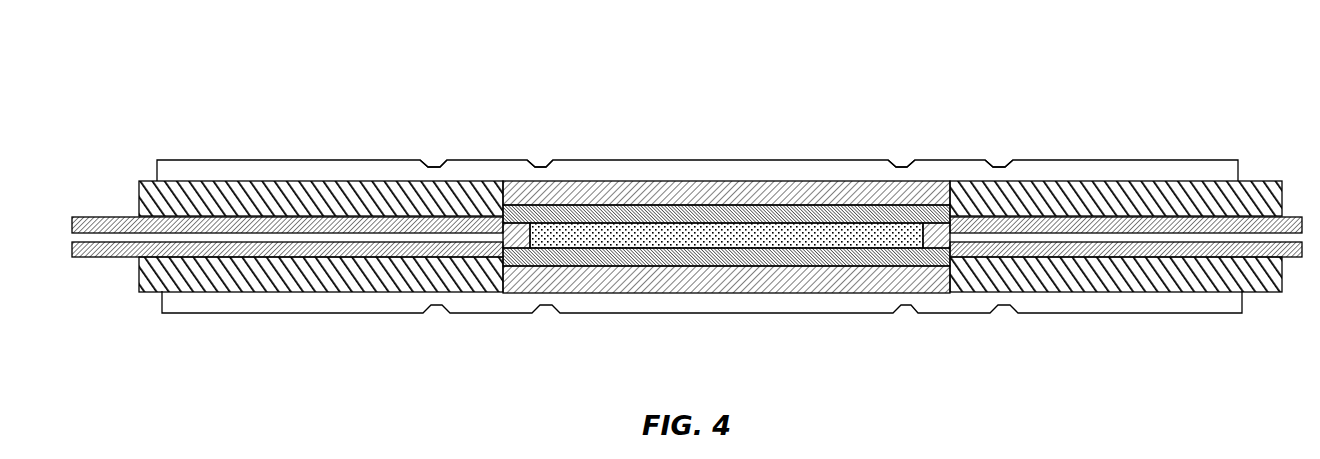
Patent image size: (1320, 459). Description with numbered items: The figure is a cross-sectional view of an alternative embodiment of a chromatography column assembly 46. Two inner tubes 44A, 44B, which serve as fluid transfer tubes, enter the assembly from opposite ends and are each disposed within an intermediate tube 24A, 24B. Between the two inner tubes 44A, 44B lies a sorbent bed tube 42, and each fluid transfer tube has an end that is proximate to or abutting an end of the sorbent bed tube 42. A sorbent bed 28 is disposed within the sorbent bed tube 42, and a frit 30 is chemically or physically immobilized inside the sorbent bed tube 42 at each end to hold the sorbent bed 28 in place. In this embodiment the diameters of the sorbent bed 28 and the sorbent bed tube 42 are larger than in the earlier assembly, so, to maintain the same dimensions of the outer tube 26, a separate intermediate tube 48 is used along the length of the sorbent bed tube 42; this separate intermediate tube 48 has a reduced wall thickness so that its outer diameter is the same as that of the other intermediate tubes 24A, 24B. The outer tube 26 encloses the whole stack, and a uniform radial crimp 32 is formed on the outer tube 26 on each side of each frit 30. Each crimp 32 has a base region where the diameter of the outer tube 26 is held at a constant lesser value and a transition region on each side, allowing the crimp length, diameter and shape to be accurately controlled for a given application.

The intermediate tube 24A is at (139, 272).
The intermediate tube 24B is at (1253, 181).
The outer tube 26 is at (640, 160).
The sorbent bed 28 is at (627, 233).
The frit 30 is at (520, 237).
The uniform radial crimp 32 is at (432, 156).
The sorbent bed tube 42 is at (773, 263).
The inner tube 44A is at (75, 216).
The inner tube 44B is at (1293, 257).
The chromatography column assembly 46 is at (1028, 100).
The separate intermediate tube 48 is at (830, 280).